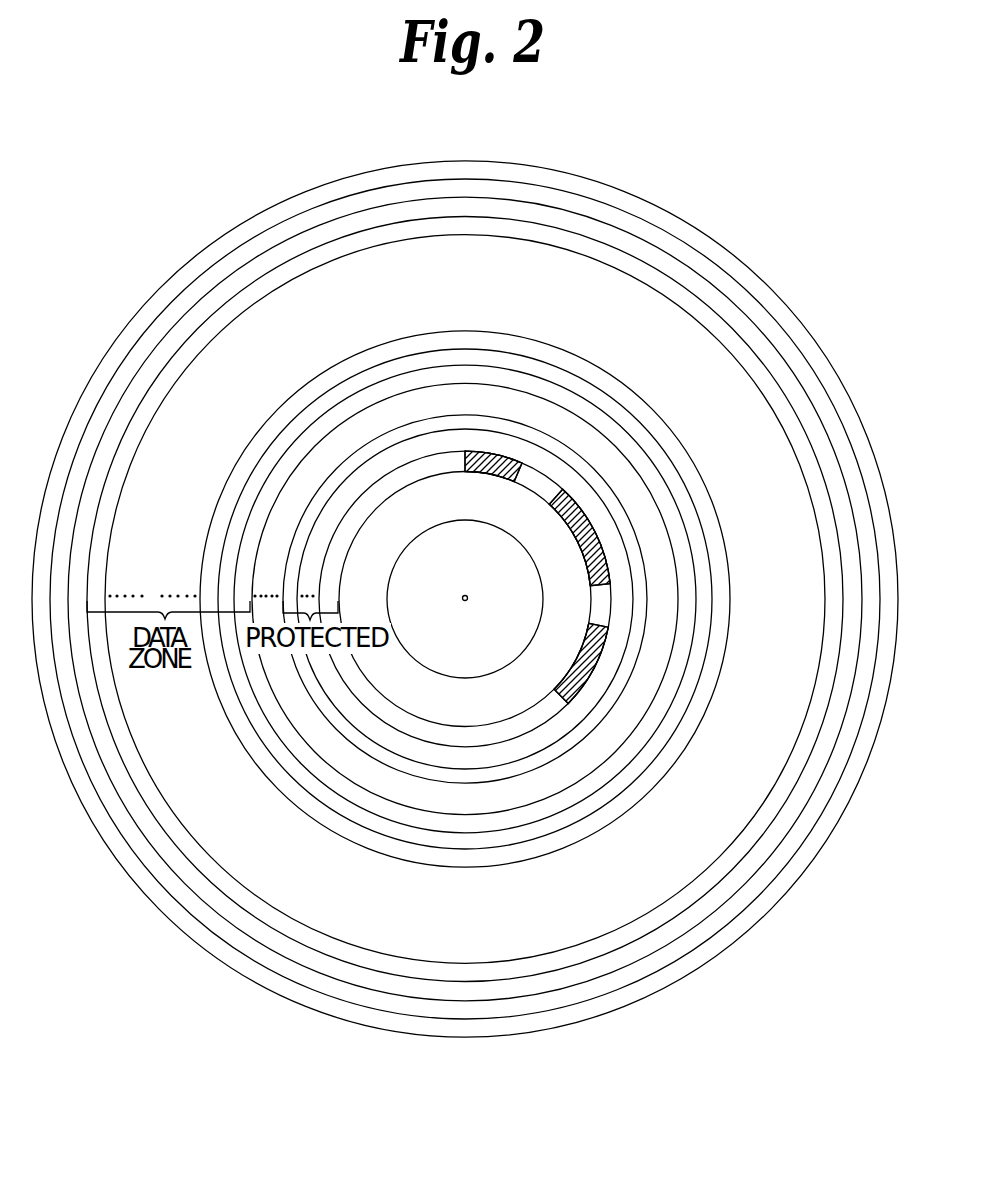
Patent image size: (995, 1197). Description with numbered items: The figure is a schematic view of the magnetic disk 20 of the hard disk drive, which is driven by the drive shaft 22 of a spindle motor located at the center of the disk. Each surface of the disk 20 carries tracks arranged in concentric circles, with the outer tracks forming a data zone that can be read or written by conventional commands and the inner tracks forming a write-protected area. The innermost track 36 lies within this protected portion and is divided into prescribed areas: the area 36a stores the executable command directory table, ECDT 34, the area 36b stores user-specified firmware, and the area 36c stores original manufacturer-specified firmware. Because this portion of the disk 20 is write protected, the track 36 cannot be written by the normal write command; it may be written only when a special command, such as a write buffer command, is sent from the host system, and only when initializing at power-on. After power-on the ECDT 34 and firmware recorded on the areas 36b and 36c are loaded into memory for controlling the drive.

The magnetic disk 20 is at (710, 237).
The drive shaft 22 is at (465, 665).
The executable command directory table (ECDT) 34 is at (492, 455).
The innermost track 36 is at (435, 455).
The area for ECDT 36a is at (516, 478).
The area for user-specified firmware 36b is at (588, 582).
The area for original manufacturer-specified firmware 36c is at (587, 627).